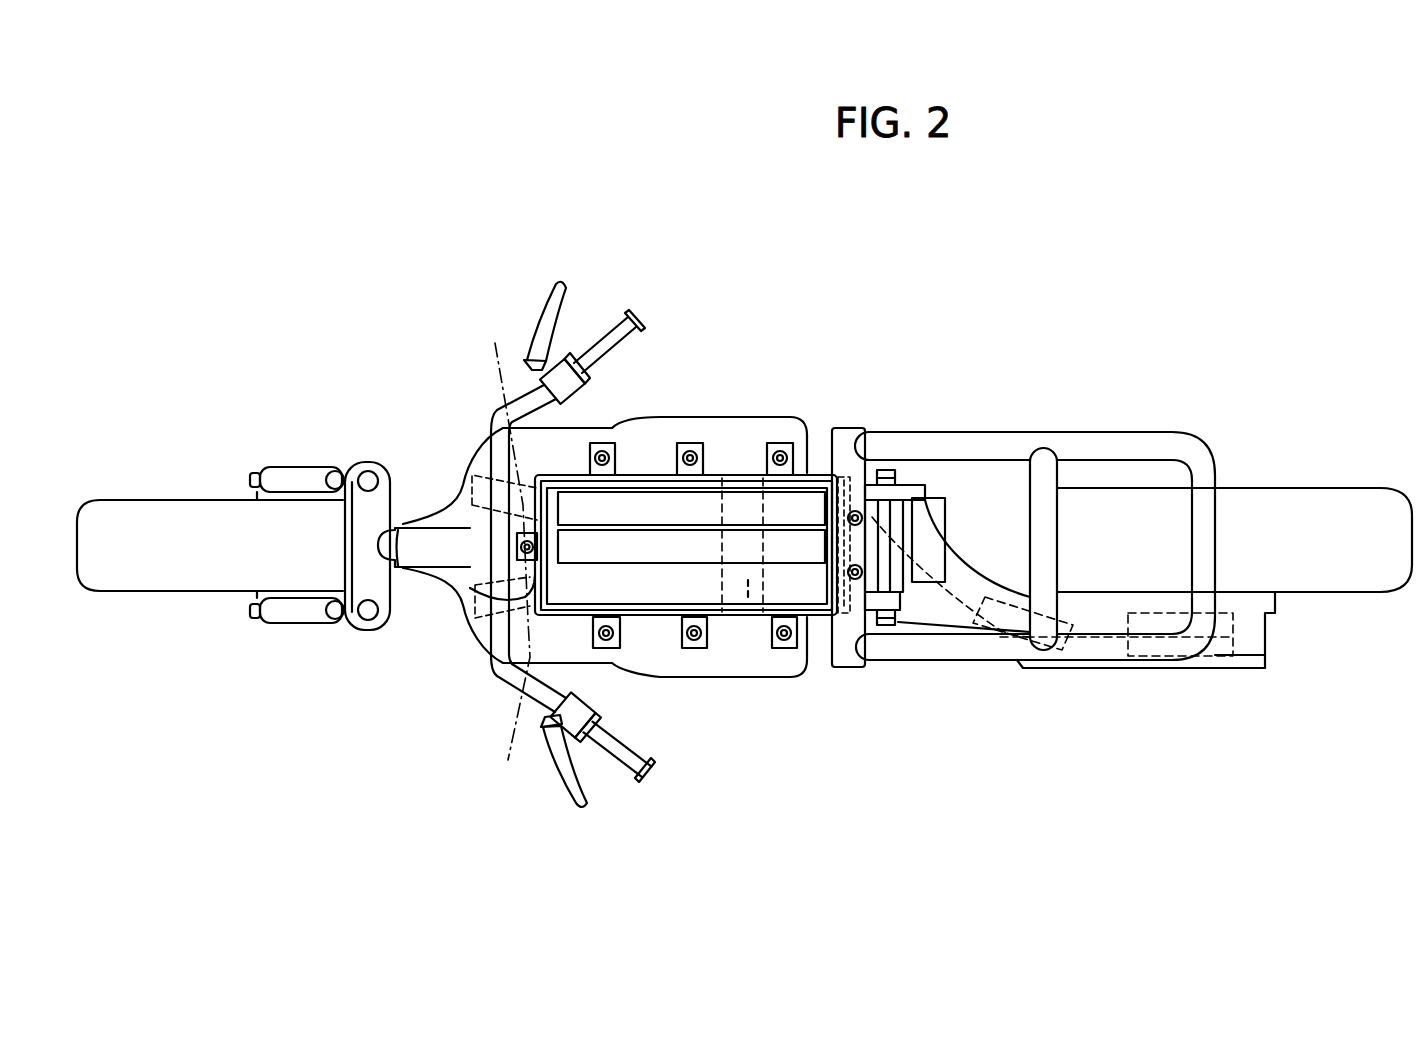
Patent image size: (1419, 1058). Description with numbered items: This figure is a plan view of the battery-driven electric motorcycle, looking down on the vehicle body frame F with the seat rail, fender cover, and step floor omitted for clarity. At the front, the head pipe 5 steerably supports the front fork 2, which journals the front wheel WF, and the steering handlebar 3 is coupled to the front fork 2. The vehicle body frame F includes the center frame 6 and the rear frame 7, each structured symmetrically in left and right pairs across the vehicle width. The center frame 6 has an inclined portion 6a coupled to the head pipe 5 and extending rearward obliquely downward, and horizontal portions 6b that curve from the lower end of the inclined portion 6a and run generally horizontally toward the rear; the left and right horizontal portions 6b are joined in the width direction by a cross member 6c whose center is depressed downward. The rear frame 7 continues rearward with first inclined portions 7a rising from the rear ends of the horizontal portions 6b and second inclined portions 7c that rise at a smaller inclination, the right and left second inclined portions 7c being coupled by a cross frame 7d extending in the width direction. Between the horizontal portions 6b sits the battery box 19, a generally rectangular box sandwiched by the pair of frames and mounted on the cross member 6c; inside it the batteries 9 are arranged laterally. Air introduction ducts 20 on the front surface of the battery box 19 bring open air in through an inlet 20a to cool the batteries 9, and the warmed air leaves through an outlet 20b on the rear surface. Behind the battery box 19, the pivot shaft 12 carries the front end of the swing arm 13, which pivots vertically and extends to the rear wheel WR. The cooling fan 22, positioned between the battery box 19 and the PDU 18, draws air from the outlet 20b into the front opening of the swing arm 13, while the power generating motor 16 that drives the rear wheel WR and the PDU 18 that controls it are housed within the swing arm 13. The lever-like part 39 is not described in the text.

The front wheel WF is at (150, 514).
The rear wheel WR is at (1349, 497).
The front fork 2 is at (308, 477).
The steering handlebar 3 is at (640, 312).
The head pipe 5 is at (437, 543).
The vehicle body frame F is at (471, 643).
The center frame 6 is at (490, 645).
The inclined portion 6a is at (453, 593).
The horizontal portions 6b is at (727, 432).
The cross member 6c is at (748, 600).
The rear frame 7 is at (1015, 442).
The first inclined portions 7a is at (815, 442).
The second inclined portions 7c is at (963, 442).
The cross frame 7d is at (1047, 477).
The batteries 9 is at (572, 505).
The pivot shaft 12 is at (875, 565).
The swing arm 13 is at (1210, 670).
The power generating motor 16 is at (1233, 632).
The PDU 18 is at (1062, 640).
The battery box 19 is at (660, 620).
The air introduction ducts 20 is at (516, 554).
The inlet 20a is at (470, 477).
The outlet 20b is at (885, 470).
The cooling fan 22 is at (918, 525).
The brake lever 39 is at (558, 286).